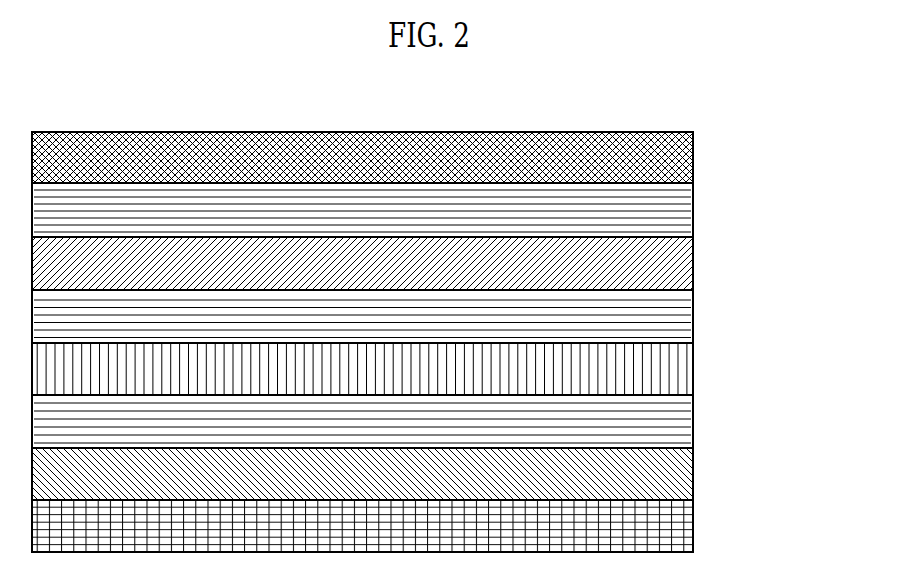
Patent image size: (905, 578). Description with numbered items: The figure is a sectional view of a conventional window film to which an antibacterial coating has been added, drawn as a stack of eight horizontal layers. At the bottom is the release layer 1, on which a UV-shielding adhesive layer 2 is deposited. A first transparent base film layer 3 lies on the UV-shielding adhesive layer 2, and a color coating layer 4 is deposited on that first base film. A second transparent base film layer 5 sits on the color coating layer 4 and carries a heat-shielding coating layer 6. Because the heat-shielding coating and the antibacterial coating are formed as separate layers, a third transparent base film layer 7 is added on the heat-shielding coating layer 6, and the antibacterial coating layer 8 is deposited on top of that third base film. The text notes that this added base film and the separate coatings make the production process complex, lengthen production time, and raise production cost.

The release layer 1 is at (693, 526).
The UV-shielding adhesive layer 2 is at (693, 474).
The first transparent base film layer 3 is at (693, 422).
The color coating layer 4 is at (693, 369).
The second transparent base film layer 5 is at (693, 316).
The heat-shielding coating layer 6 is at (693, 264).
The third transparent base film layer 7 is at (693, 210).
The antibacterial coating layer 8 is at (693, 158).